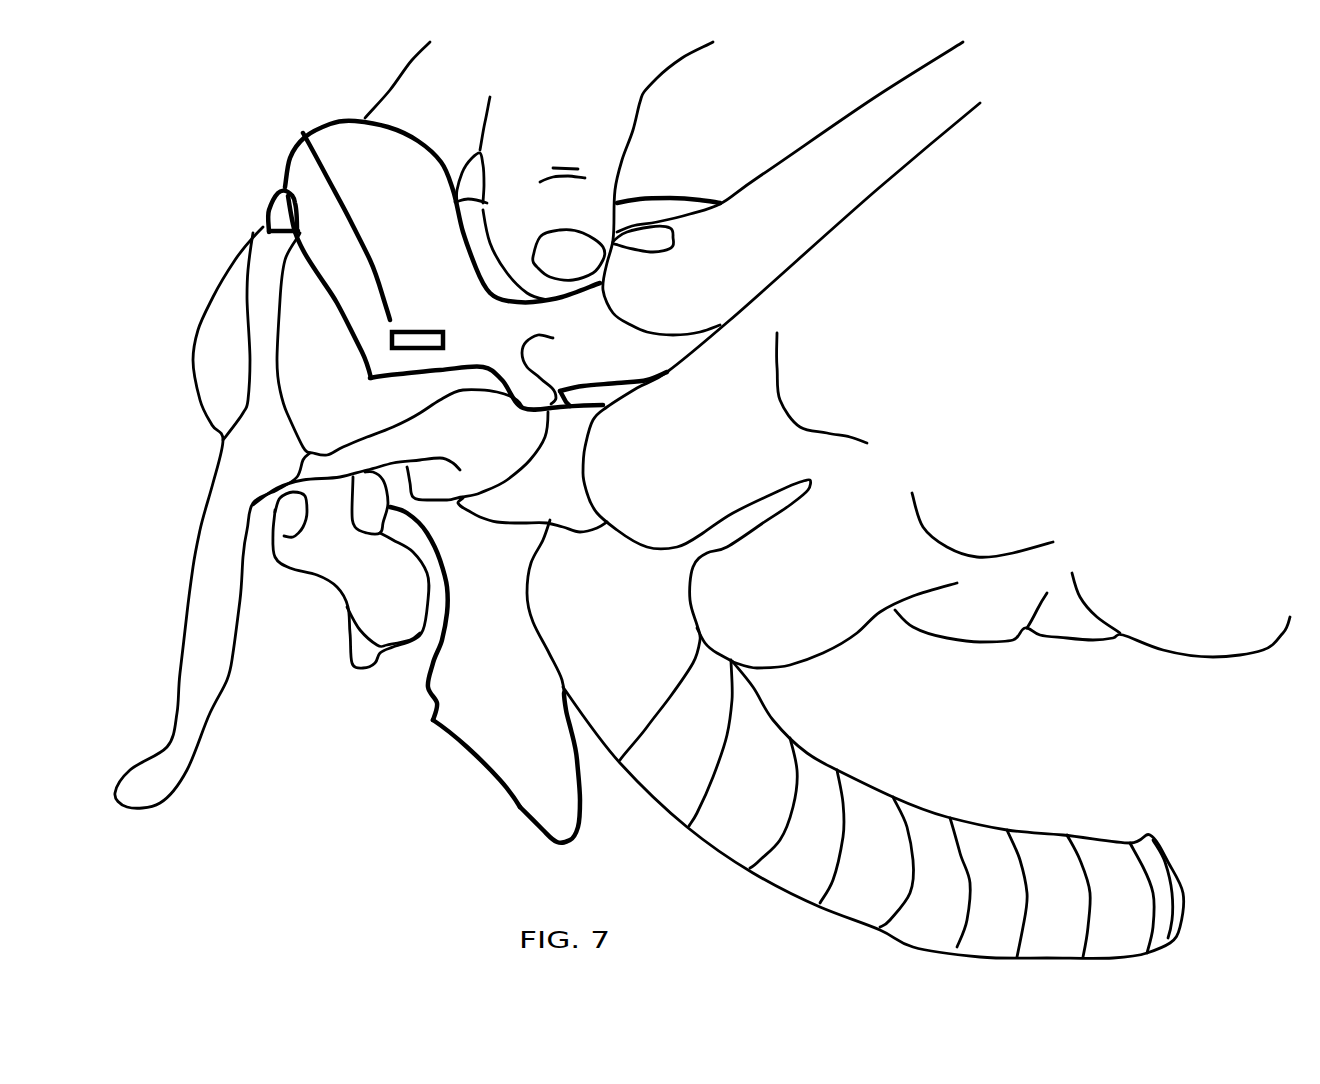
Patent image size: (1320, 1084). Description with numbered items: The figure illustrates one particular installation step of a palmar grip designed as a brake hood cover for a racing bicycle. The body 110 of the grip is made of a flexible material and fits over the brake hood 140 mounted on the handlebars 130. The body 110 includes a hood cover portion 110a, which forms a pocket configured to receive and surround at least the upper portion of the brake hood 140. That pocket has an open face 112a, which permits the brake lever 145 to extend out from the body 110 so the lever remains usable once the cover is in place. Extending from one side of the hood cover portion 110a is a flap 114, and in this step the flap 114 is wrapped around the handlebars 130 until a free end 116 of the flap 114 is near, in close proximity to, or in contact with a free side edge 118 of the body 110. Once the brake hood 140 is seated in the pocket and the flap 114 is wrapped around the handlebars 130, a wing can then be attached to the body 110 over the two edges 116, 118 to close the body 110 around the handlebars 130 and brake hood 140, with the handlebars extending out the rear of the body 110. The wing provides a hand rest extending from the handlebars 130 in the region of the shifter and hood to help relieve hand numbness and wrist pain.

The body 110 is at (228, 164).
The hood cover portion 110a is at (300, 135).
The open face 112a is at (318, 277).
The free side edge 118 is at (594, 370).
The brake hood 140 is at (345, 404).
The brake lever 145 is at (237, 650).
The handlebars 130 is at (628, 623).
The flap 114 is at (522, 712).
The free end 116 is at (493, 778).